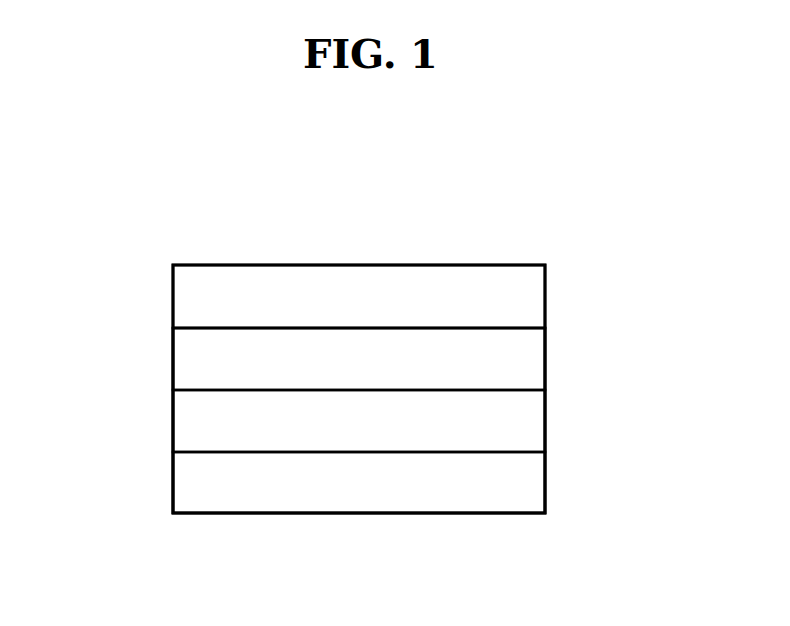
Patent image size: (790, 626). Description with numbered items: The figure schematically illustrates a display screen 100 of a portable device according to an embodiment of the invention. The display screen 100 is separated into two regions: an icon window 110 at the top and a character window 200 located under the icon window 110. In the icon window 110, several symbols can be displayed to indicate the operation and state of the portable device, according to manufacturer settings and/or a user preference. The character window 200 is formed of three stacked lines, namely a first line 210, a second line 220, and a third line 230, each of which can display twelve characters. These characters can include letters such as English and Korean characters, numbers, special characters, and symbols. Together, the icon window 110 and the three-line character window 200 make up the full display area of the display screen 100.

The display screen 100 is at (470, 225).
The icon window 110 is at (568, 267).
The character window 200 is at (568, 331).
The first line 210 is at (172, 359).
The second line 220 is at (172, 420).
The third line 230 is at (172, 482).